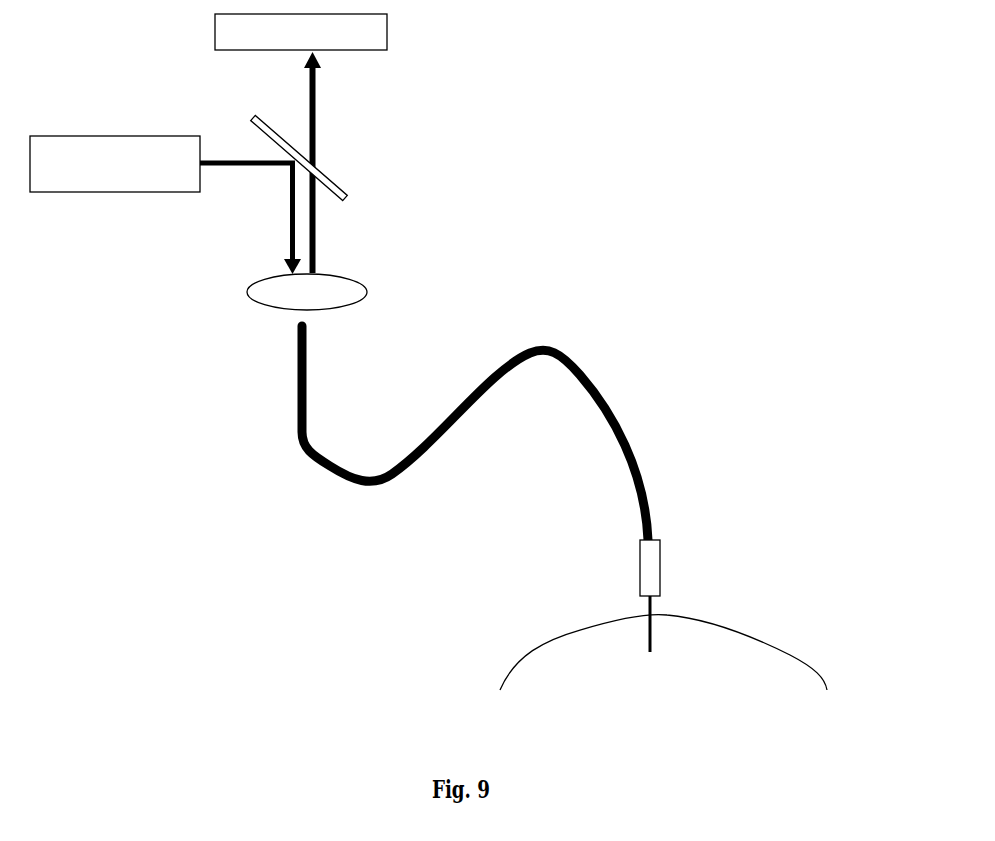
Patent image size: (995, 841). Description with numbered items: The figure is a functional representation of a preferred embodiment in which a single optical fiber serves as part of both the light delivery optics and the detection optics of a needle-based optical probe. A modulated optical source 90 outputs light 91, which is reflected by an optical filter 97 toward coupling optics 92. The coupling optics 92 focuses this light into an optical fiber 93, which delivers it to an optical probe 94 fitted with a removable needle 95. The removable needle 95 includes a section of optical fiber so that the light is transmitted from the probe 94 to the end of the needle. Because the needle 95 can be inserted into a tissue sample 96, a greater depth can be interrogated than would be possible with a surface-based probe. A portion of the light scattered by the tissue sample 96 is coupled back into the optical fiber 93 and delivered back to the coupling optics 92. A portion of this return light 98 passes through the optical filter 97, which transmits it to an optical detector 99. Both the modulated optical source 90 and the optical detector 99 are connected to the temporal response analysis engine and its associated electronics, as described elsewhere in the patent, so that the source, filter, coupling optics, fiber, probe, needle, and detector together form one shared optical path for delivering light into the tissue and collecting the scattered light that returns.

The modulated optical source 90 is at (68, 192).
The light 91 is at (290, 228).
The coupling optics 92 is at (264, 298).
The optical fiber 93 is at (347, 483).
The optical probe 94 is at (640, 567).
The removable needle 95 is at (640, 603).
The tissue sample 96 is at (743, 660).
The optical filter 97 is at (347, 200).
The return light 98 is at (313, 125).
The optical detector 99 is at (387, 33).